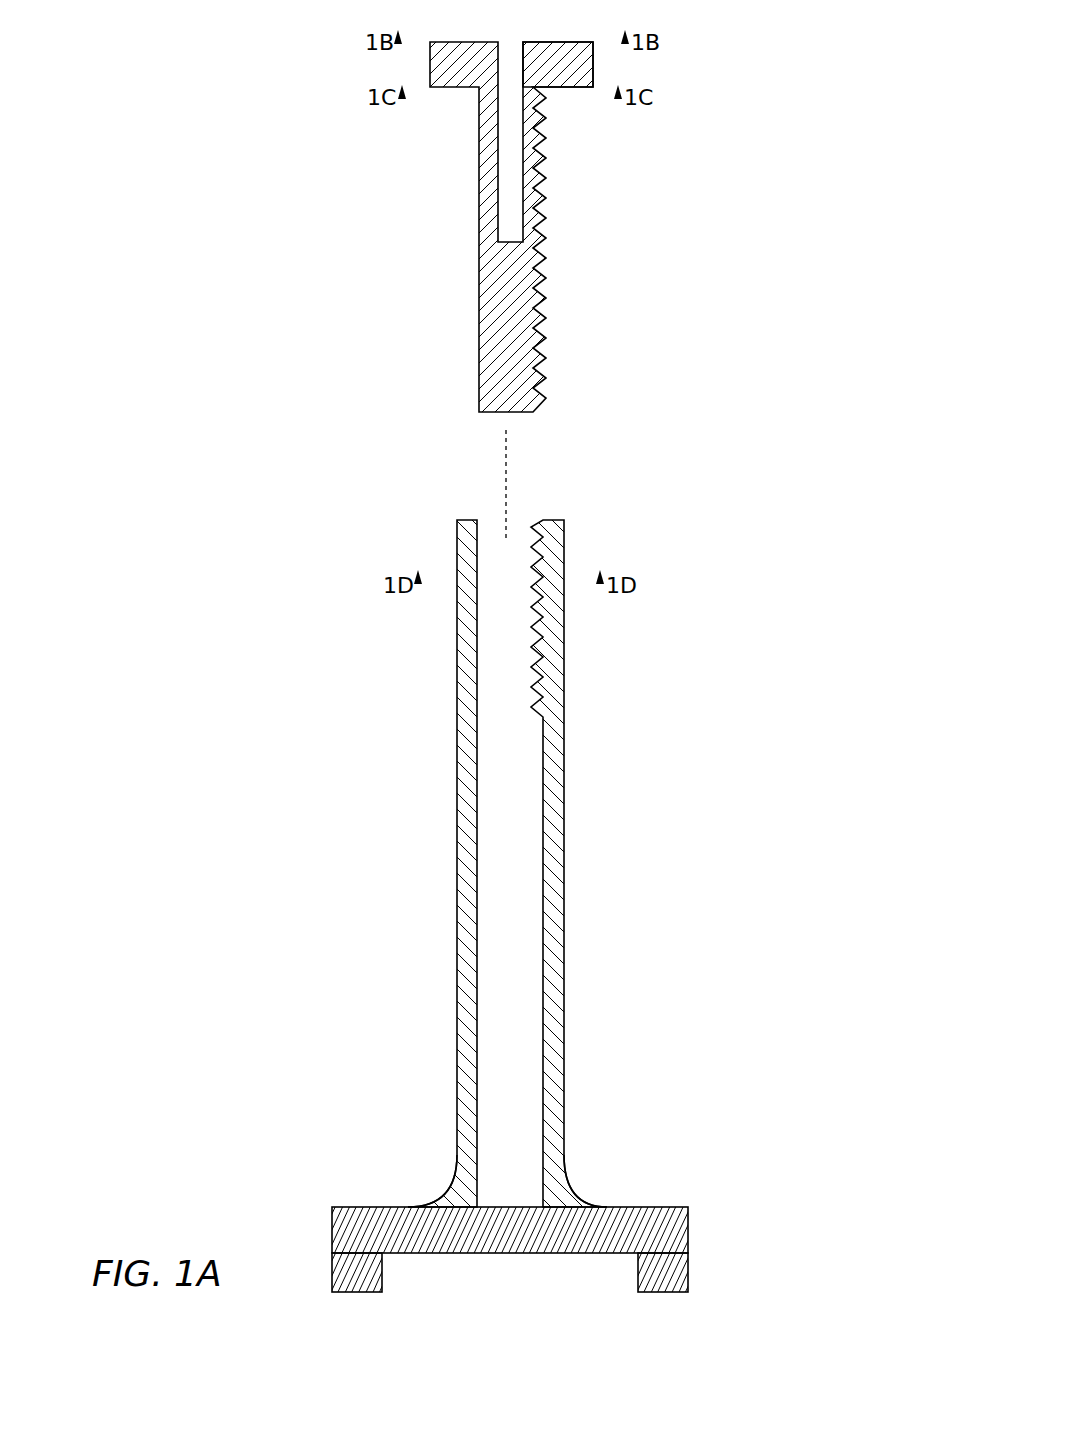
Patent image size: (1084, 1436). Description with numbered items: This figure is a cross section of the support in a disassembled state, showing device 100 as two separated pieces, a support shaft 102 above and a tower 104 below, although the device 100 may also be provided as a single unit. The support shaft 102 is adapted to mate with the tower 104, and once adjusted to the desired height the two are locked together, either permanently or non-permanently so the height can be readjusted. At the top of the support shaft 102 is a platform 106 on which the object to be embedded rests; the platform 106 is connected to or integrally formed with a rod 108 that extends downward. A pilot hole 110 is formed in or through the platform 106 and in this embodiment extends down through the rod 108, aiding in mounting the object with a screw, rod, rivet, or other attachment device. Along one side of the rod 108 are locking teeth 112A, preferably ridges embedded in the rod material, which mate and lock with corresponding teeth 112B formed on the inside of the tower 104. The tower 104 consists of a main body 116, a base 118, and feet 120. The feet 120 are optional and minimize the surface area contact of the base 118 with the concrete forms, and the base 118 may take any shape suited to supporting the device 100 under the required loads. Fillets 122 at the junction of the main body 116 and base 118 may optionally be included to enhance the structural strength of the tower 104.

The device 100 is at (784, 118).
The support shaft 102 is at (634, 231).
The tower 104 is at (316, 832).
The platform 106 is at (548, 42).
The rod 108 is at (478, 222).
The pilot hole 110 is at (511, 50).
The locking teeth 112A is at (547, 322).
The teeth 112B is at (528, 540).
The main body 116 is at (455, 810).
The base 118 is at (331, 1228).
The feet 120 is at (331, 1272).
The fillets 122 is at (437, 1188).